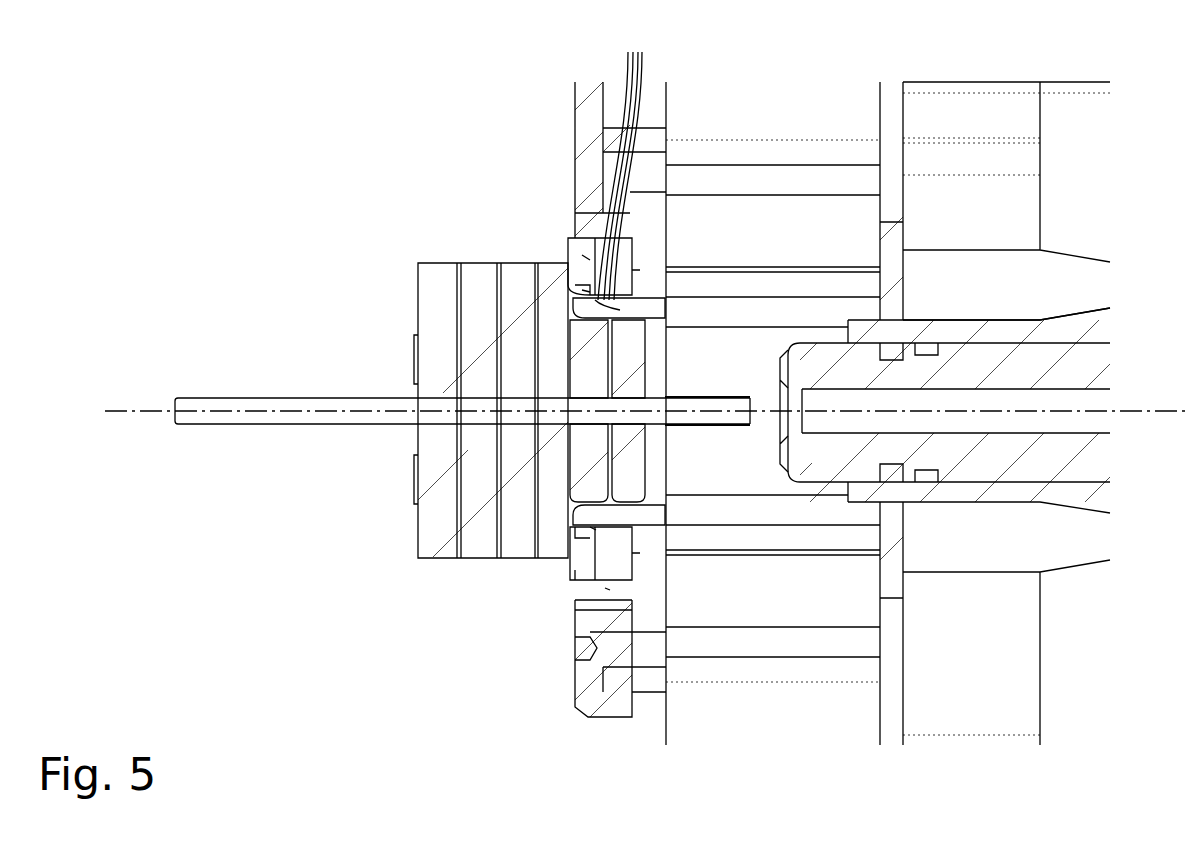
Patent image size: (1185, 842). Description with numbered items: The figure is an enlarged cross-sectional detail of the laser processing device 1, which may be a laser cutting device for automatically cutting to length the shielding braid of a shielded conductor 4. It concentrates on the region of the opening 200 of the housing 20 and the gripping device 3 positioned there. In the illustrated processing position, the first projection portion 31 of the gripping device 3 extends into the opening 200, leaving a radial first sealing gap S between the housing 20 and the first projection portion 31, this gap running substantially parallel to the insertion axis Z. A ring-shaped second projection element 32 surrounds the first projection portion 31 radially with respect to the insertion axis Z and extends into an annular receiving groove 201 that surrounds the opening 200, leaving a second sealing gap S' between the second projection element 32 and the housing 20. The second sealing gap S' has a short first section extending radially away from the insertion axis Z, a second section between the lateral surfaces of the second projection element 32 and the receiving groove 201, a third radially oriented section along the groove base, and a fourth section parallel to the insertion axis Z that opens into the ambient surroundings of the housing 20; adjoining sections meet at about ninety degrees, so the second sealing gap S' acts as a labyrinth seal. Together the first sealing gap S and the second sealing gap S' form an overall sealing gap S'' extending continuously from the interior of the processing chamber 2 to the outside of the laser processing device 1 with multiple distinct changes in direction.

The laser processing device 1 is at (787, 82).
The processing chamber 2 is at (747, 452).
The gripping device 3 is at (470, 262).
The shielded conductor 4 is at (270, 405).
The housing 20 is at (580, 126).
The opening 200 is at (660, 378).
The annular receiving groove 201 is at (636, 247).
The first projection portion 31 is at (628, 345).
The second projection element 32 is at (578, 262).
The insertion axis Z is at (128, 410).
The first sealing gap S is at (653, 398).
The second sealing gap S' is at (611, 411).
The overall sealing gap S'' is at (512, 162).